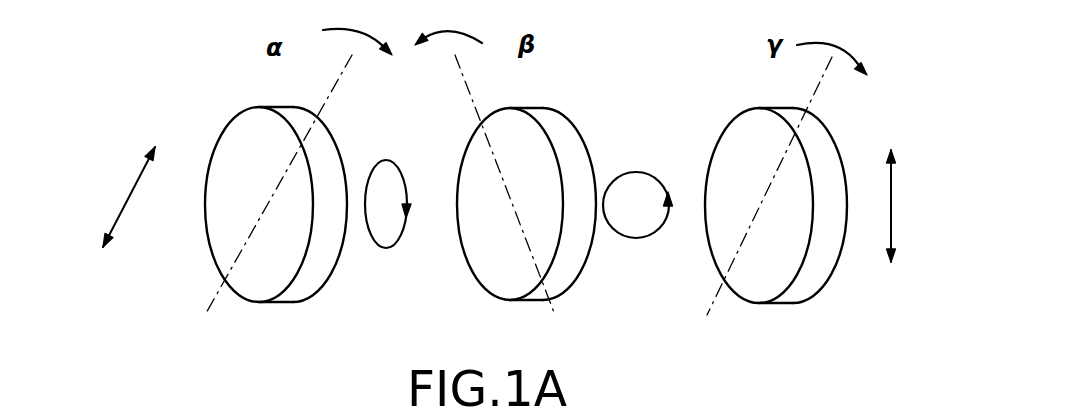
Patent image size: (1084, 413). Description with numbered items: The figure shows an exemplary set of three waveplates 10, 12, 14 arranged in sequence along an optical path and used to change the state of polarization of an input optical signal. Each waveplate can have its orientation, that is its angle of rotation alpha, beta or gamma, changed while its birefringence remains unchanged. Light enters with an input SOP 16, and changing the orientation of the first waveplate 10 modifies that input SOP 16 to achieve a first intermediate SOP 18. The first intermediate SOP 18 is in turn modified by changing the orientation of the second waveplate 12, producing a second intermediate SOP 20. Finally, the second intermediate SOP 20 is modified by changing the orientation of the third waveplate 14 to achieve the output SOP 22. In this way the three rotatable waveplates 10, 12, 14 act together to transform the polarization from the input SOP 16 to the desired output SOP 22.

The waveplate 10 is at (218, 260).
The second waveplate 12 is at (475, 268).
The third waveplate 14 is at (720, 255).
The input SOP 16 is at (127, 197).
The first intermediate SOP 18 is at (387, 249).
The second intermediate SOP 20 is at (630, 238).
The output SOP 22 is at (891, 215).